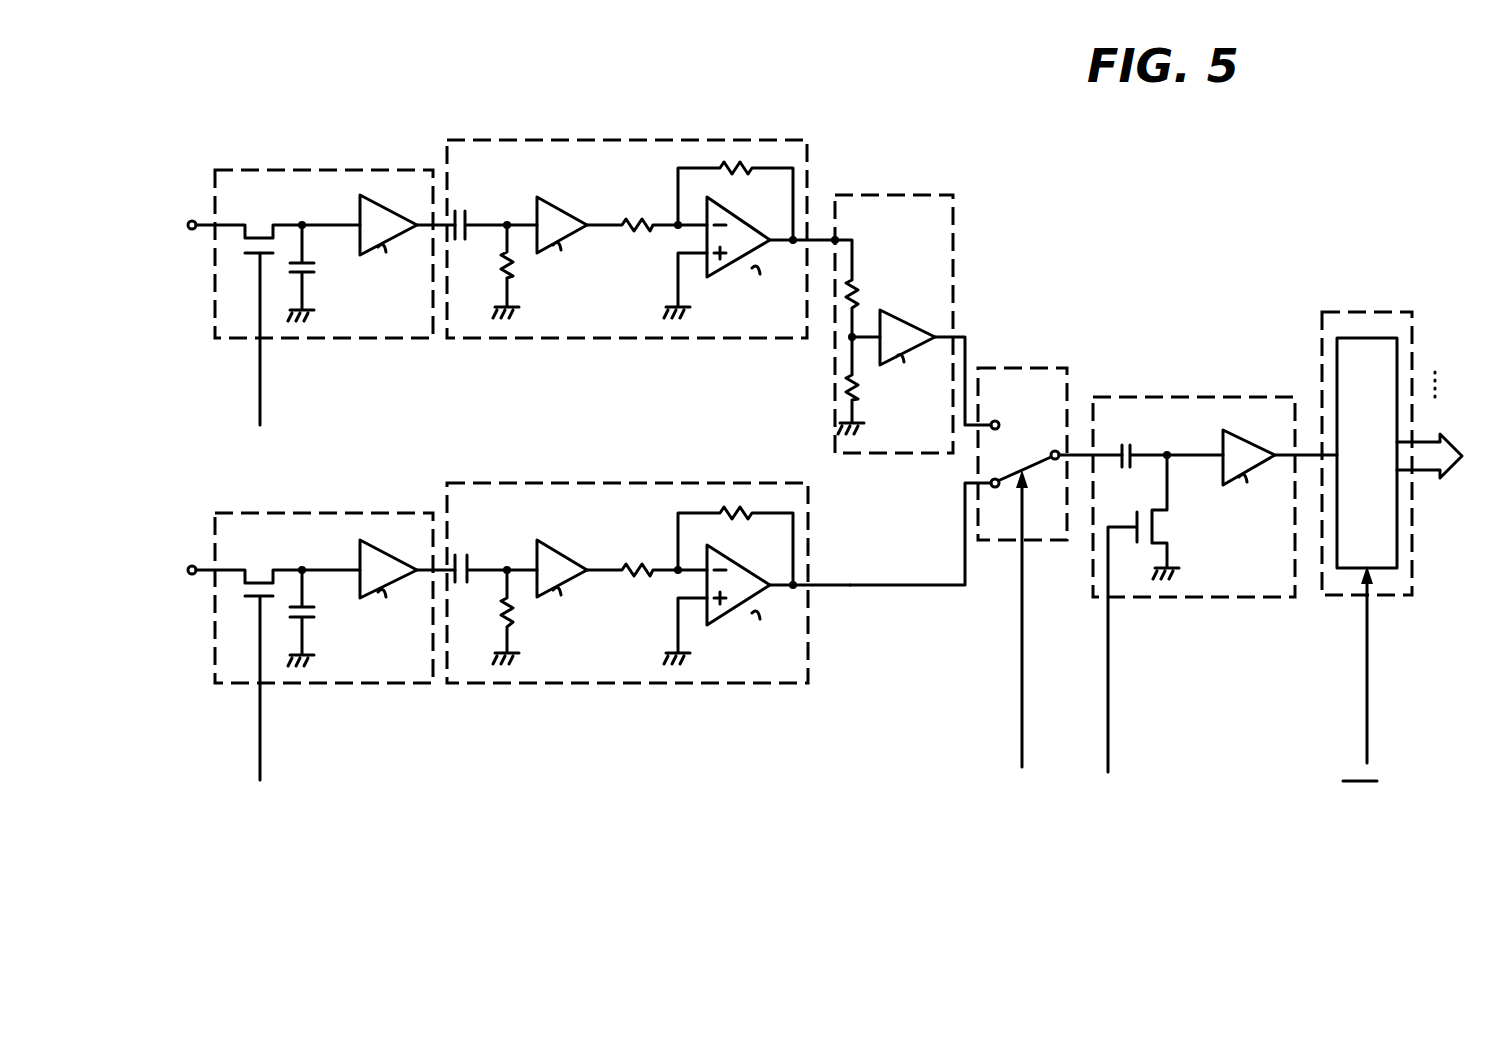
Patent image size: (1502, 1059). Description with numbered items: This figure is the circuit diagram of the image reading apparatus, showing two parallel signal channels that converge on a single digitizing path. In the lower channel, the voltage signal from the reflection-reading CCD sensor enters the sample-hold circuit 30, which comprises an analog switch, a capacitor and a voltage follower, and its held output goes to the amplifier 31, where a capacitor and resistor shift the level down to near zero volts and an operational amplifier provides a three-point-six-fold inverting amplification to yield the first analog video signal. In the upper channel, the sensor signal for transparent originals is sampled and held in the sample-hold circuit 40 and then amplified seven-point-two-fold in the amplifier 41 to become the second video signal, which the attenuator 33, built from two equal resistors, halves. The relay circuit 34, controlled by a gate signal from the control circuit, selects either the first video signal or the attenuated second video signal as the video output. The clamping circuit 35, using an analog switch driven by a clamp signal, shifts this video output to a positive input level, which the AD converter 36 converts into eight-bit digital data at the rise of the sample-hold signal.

The sample-hold circuit 30 is at (365, 660).
The amplifier 31 is at (644, 667).
The attenuator 33 is at (917, 207).
The relay circuit 34 is at (1060, 370).
The clamping circuit 35 is at (1228, 403).
The AD converter 36 is at (1402, 517).
The sample-hold circuit 40 is at (340, 178).
The amplifier 41 is at (621, 158).